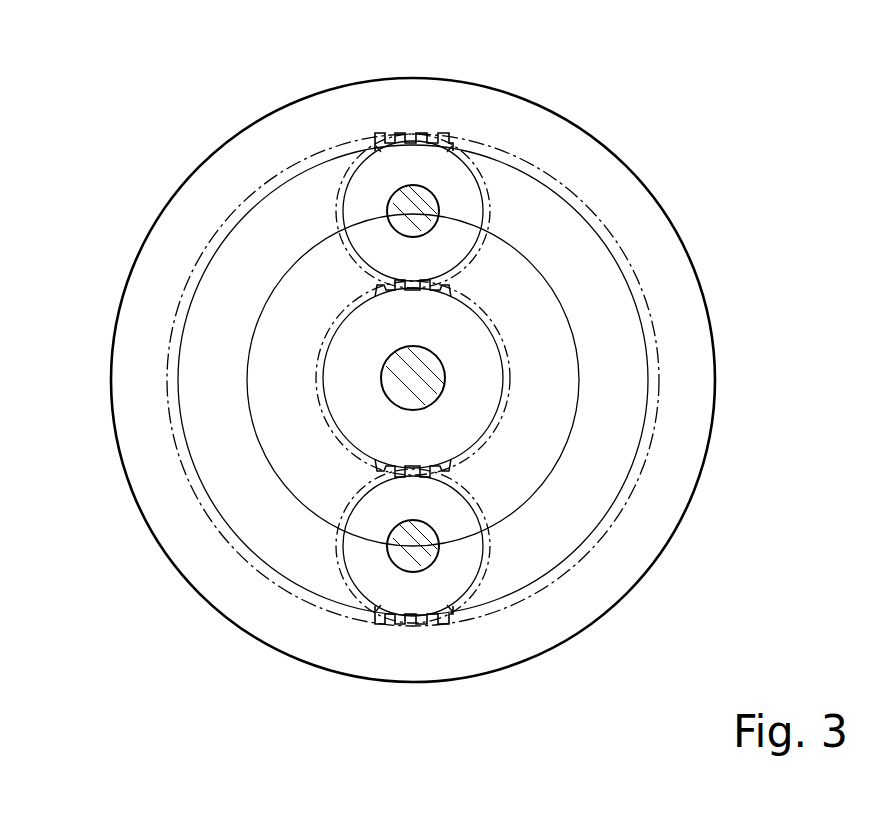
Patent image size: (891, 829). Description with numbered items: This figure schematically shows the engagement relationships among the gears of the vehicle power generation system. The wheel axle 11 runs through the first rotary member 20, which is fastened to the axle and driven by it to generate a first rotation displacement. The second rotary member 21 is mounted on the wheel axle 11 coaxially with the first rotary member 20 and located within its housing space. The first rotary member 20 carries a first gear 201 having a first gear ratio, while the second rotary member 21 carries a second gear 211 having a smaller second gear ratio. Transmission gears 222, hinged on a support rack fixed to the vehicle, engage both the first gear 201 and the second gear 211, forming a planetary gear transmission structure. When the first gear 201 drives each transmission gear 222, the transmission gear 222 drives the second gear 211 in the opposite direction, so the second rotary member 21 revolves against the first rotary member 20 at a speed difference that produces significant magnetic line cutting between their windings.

The first rotary member 20 is at (256, 120).
The first gear 201 is at (436, 133).
The transmission gear 222 is at (447, 149).
The second gear 211 is at (377, 292).
The wheel axle 11 is at (400, 378).
The second rotary member 21 is at (293, 460).